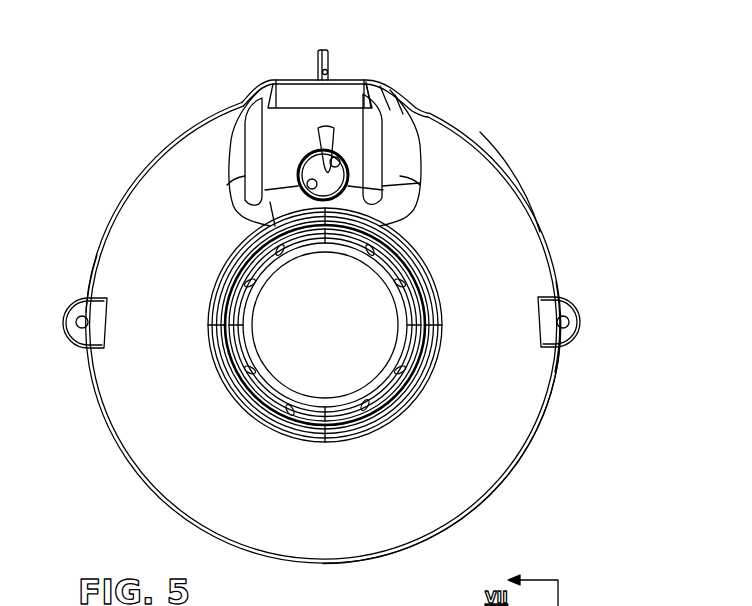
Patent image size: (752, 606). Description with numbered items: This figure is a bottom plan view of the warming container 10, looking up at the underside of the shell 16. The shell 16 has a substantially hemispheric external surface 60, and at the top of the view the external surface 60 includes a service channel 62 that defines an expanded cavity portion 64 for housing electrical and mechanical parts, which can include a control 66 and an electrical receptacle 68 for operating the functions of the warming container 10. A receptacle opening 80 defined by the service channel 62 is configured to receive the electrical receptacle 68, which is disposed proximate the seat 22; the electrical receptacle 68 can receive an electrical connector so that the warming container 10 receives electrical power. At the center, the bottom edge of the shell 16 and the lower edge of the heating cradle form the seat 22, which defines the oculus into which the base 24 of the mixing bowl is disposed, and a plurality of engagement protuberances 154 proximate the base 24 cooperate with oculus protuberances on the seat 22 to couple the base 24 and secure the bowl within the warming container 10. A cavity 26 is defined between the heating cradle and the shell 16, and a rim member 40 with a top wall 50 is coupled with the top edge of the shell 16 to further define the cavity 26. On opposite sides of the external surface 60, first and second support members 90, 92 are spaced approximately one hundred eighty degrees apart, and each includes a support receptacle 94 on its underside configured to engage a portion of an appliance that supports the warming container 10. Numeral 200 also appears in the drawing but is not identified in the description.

The warming container 10 is at (102, 130).
The shell 16 is at (166, 186).
The seat 22 is at (256, 400).
The base 24 is at (408, 316).
The cavity 26 is at (127, 232).
The rim member 40 is at (524, 473).
The top wall 50 is at (560, 291).
The external surface 60 is at (507, 242).
The service channel 62 is at (283, 132).
The expanded cavity portion 64 is at (303, 90).
The control 66 is at (330, 70).
The electrical receptacle 68 is at (345, 176).
The receptacle opening 80 is at (342, 157).
The first support member 90 is at (577, 320).
The second support member 92 is at (74, 332).
The support receptacle 94 is at (79, 317).
The engagement protuberances 154 is at (362, 345).
The handle tab 200 is at (328, 56).